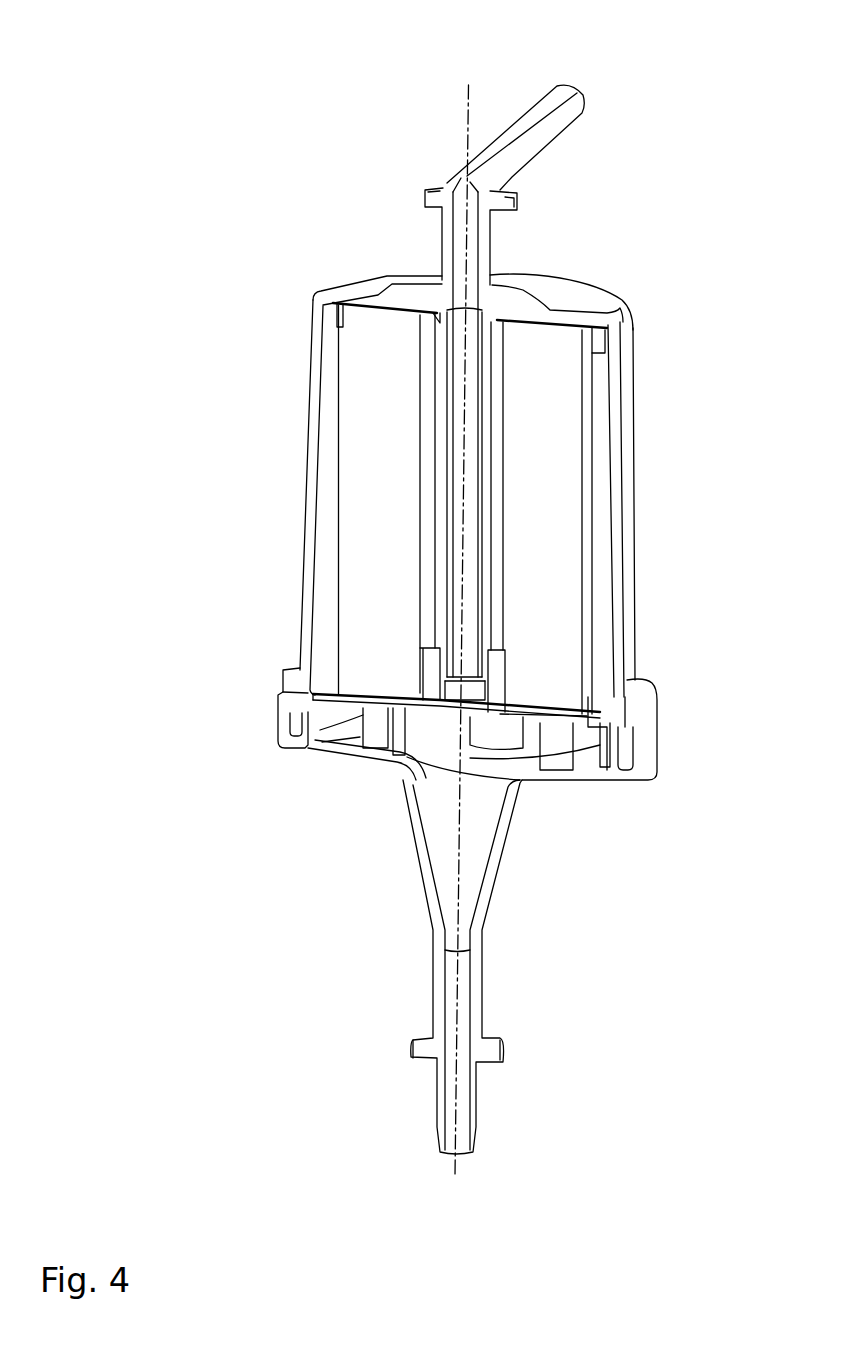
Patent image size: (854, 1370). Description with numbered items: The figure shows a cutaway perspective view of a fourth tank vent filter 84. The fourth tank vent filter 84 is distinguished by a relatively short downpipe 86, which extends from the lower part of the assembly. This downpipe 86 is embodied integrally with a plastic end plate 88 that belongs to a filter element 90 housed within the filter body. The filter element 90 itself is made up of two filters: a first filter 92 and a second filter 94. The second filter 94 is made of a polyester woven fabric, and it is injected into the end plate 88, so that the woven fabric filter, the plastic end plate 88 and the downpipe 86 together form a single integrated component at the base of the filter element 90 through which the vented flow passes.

The fourth tank vent filter 84 is at (232, 94).
The downpipe 86 is at (497, 675).
The end plate 88 is at (353, 700).
The filter element 90 is at (340, 507).
The first filter 92 is at (557, 500).
The second filter 94 is at (458, 703).